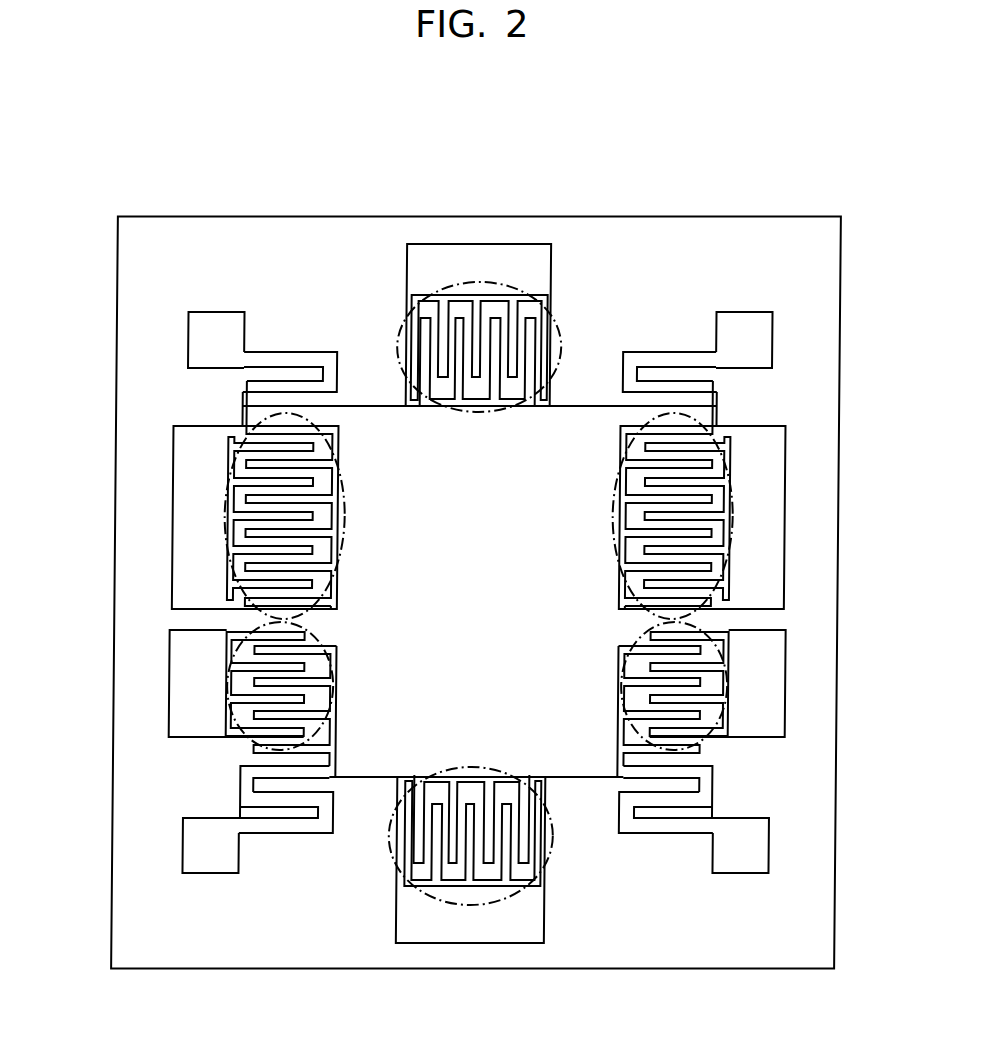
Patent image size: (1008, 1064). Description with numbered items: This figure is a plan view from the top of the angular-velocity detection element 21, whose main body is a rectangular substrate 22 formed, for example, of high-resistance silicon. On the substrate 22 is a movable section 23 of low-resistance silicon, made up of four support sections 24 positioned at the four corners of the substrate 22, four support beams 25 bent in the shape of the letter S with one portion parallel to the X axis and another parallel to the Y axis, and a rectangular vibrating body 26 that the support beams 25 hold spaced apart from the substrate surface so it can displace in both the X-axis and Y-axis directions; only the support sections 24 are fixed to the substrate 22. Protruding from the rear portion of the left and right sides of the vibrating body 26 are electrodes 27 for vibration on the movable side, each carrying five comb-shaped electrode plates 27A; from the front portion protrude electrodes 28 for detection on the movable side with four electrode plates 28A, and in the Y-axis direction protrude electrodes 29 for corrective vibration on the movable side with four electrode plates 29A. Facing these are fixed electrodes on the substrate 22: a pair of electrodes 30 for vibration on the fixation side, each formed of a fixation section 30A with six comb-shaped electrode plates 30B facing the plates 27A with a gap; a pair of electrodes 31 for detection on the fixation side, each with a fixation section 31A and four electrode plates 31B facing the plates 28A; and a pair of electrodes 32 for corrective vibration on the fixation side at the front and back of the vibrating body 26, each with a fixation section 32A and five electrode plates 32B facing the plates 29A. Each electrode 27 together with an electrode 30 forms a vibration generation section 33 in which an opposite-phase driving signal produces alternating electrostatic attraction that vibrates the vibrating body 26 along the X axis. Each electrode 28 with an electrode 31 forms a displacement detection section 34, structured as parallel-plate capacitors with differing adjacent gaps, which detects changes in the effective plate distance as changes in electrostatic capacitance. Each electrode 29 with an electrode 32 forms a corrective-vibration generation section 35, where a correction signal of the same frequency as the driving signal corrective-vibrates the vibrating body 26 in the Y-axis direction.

The angular-velocity detection element 21 is at (758, 190).
The substrate 22 is at (815, 294).
The movable section 23 is at (577, 400).
The support section 24 is at (215, 325).
The support beam 25 is at (652, 355).
The vibrating body 26 is at (383, 432).
The electrode for vibration on the movable side 27 is at (268, 433).
The electrode plate 27A is at (250, 520).
The electrode for detection on the movable side 28 is at (250, 785).
The electrode plate 28A is at (234, 747).
The electrode for corrective vibration on the movable side 29 is at (496, 578).
The electrode plate 29A is at (488, 318).
The electrode for vibration on the fixation side 30 is at (483, 534).
The fixation section 30A is at (190, 553).
The electrode plate 30B is at (247, 455).
The electrode for detection on the fixation side 31 is at (478, 721).
The fixation section 31A is at (188, 680).
The electrode plate 31B is at (239, 645).
The electrode for corrective vibration on the fixation side 32 is at (445, 593).
The fixation section 32A is at (425, 257).
The electrode plate 32B is at (544, 324).
The vibration generation section 33 is at (223, 487).
The displacement detection section 34 is at (228, 688).
The corrective-vibration generation section 35 is at (457, 285).